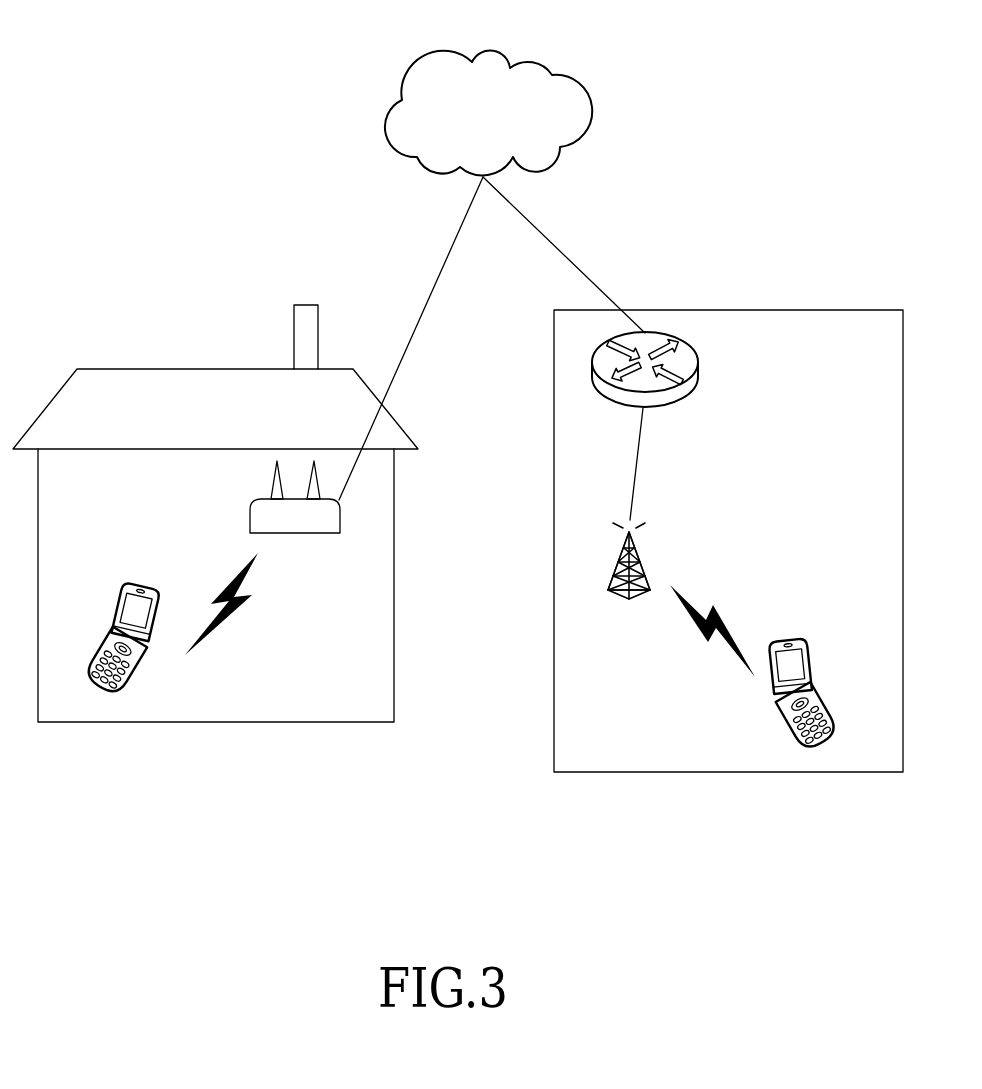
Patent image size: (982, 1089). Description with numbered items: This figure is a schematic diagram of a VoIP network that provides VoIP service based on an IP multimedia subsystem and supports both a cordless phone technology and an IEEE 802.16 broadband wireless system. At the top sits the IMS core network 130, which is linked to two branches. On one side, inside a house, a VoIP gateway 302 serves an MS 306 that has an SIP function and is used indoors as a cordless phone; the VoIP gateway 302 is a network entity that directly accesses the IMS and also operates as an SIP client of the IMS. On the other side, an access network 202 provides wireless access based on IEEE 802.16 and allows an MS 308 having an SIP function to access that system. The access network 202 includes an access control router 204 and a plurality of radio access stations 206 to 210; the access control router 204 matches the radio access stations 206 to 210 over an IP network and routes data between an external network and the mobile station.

The IMS core network 130 is at (493, 47).
The access network 202 is at (727, 310).
The access control router 204 is at (698, 364).
The radio access station 206 is at (629, 599).
The radio access station 210 is at (629, 561).
The VoIP gateway 302 is at (249, 526).
The mobile station 306 is at (100, 616).
The mobile station 308 is at (818, 679).